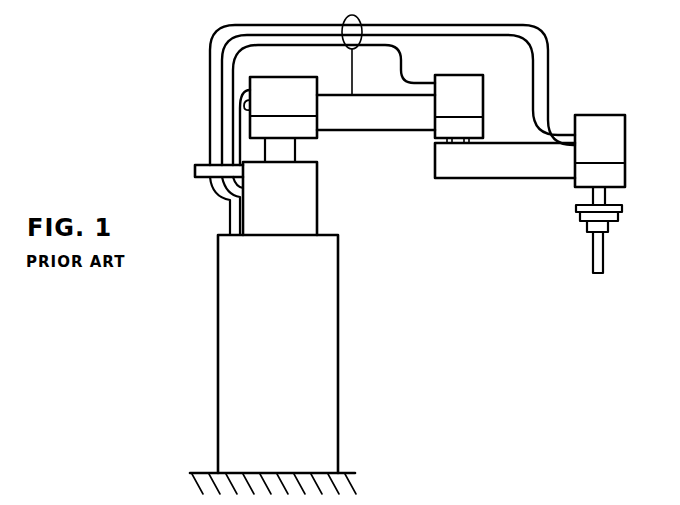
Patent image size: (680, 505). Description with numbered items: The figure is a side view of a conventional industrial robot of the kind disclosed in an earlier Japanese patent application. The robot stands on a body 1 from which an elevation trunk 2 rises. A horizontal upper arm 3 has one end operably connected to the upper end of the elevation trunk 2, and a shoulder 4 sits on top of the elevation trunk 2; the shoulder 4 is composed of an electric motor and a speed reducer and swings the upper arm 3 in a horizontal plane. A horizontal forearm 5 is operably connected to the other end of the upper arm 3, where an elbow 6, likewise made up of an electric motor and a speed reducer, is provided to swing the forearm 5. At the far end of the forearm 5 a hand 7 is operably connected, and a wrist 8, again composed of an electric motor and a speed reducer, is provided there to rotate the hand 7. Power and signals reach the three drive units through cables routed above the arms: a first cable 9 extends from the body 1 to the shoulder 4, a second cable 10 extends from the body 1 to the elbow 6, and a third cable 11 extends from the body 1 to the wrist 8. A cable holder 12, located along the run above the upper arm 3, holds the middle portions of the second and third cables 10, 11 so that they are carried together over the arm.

The body 1 is at (337, 297).
The elevation trunk 2 is at (318, 219).
The horizontal upper arm 3 is at (373, 131).
The shoulder 4 is at (287, 80).
The horizontal forearm 5 is at (492, 180).
The elbow 6 is at (484, 108).
The hand 7 is at (614, 224).
The wrist 8 is at (627, 164).
The first cable 9 is at (247, 113).
The second cable 10 is at (413, 62).
The third cable 11 is at (546, 78).
The cable holder 12 is at (352, 62).